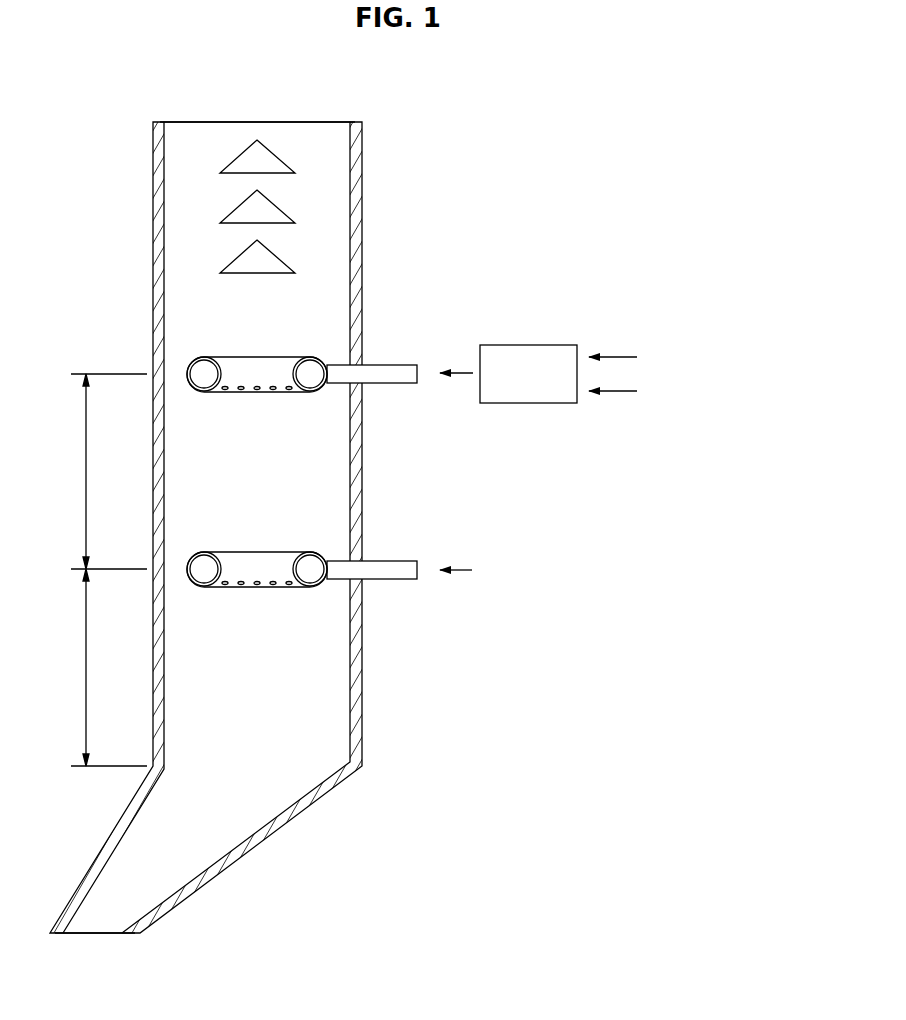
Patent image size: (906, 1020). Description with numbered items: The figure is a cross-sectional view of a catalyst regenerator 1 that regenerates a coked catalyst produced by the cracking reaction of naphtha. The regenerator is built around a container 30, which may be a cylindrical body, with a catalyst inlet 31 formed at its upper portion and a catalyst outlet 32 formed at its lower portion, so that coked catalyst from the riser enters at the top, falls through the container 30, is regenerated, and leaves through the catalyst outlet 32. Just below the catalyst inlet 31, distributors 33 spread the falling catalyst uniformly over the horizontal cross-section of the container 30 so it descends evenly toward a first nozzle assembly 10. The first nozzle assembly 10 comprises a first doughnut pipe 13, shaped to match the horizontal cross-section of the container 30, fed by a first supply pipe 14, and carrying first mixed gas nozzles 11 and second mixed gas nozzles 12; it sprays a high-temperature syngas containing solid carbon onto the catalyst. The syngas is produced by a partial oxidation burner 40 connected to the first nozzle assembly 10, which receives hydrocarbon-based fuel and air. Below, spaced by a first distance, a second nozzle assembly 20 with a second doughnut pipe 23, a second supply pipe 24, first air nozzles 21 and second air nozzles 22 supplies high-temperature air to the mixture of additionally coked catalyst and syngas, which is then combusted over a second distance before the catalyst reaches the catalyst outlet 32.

The catalyst regenerator 1 is at (517, 88).
The first nozzle assembly 10 is at (260, 381).
The first mixed gas nozzles 11 is at (242, 392).
The second mixed gas nozzles 12 is at (193, 392).
The first doughnut pipe 13 is at (255, 357).
The first supply pipe 14 is at (398, 365).
The second nozzle assembly 20 is at (260, 577).
The first air nozzles 21 is at (242, 587).
The second air nozzles 22 is at (193, 587).
The second doughnut pipe 23 is at (255, 552).
The second supply pipe 24 is at (398, 561).
The container 30 is at (358, 236).
The catalyst inlet 31 is at (257, 121).
The catalyst outlet 32 is at (94, 935).
The distributors 33 is at (274, 158).
The partial oxidation burner 40 is at (525, 345).